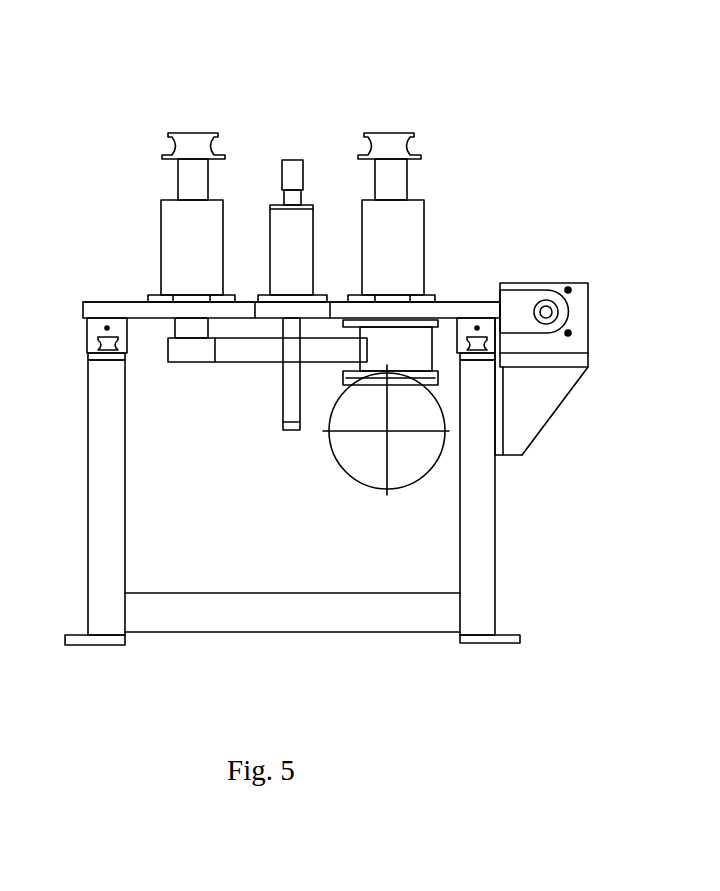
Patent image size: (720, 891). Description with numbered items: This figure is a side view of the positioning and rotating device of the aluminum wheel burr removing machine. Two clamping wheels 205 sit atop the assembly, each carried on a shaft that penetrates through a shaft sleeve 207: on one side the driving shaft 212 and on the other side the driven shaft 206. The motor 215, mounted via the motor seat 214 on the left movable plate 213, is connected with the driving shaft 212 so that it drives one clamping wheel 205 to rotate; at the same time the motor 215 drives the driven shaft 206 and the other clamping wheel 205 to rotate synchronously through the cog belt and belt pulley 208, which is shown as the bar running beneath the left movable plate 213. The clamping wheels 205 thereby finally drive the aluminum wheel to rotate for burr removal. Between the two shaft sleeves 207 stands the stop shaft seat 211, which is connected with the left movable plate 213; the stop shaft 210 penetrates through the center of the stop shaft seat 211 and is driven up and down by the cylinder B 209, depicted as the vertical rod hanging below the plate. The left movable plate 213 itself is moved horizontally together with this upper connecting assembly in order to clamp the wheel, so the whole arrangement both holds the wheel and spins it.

The clamping wheels 205 is at (548, 49).
The driven shaft 206 is at (193, 190).
The shaft sleeves 207 is at (548, 169).
The cog belt and belt pulley 208 is at (178, 419).
The cylinder B 209 is at (216, 398).
The stop shaft 210 is at (297, 172).
The stop shaft seat 211 is at (448, 48).
The driving shaft 212 is at (548, 102).
The left movable plate 213 is at (548, 236).
The motor seat 214 is at (597, 510).
The motor 215 is at (587, 603).